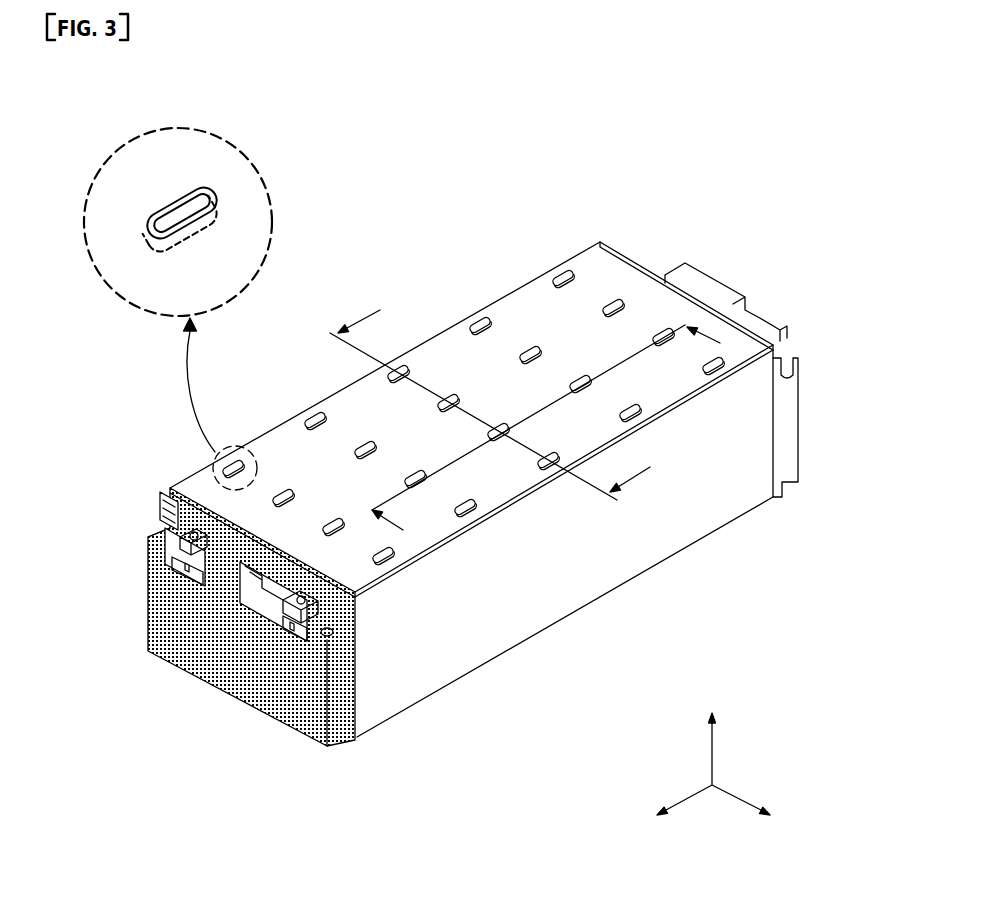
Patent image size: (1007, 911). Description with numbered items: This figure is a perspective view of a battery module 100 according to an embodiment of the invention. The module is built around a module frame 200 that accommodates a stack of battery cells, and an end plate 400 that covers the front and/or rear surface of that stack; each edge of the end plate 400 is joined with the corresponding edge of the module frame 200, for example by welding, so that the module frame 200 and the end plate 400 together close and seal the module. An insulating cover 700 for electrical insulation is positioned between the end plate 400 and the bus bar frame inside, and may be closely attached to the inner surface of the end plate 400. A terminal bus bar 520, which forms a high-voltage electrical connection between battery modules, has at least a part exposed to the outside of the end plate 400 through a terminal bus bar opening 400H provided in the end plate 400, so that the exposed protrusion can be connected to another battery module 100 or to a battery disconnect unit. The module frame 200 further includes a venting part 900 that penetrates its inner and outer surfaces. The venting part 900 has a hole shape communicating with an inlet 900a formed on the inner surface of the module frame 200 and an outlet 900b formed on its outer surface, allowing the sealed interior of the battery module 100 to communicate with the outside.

The battery module 100 is at (479, 161).
The module frame 200 is at (347, 410).
The end plate 400 is at (707, 285).
The terminal bus bar opening 400H is at (178, 578).
The terminal bus bar 520 is at (163, 518).
The insulating cover 700 is at (173, 561).
The venting part 900 is at (557, 272).
The inlet 900a is at (200, 237).
The outlet 900b is at (210, 192).